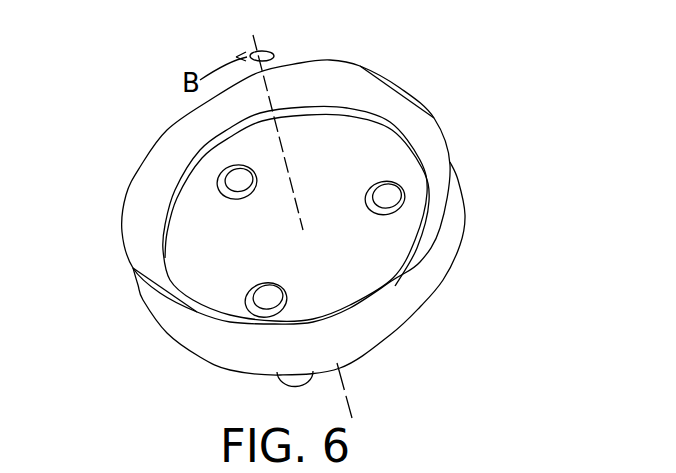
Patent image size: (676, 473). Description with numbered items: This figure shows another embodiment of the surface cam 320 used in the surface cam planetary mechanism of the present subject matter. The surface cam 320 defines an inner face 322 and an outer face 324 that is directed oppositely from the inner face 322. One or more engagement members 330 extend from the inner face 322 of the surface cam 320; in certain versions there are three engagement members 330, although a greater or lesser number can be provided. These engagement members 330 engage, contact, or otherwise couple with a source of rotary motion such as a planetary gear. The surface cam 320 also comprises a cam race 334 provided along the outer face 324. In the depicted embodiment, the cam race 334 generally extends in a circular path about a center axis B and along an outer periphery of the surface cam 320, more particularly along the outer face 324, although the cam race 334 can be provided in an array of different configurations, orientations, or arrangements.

The surface cam 320 is at (508, 128).
The inner face 322 is at (390, 327).
The outer face 324 is at (183, 240).
The engagement member 330 is at (280, 377).
The cam race 334 is at (333, 83).